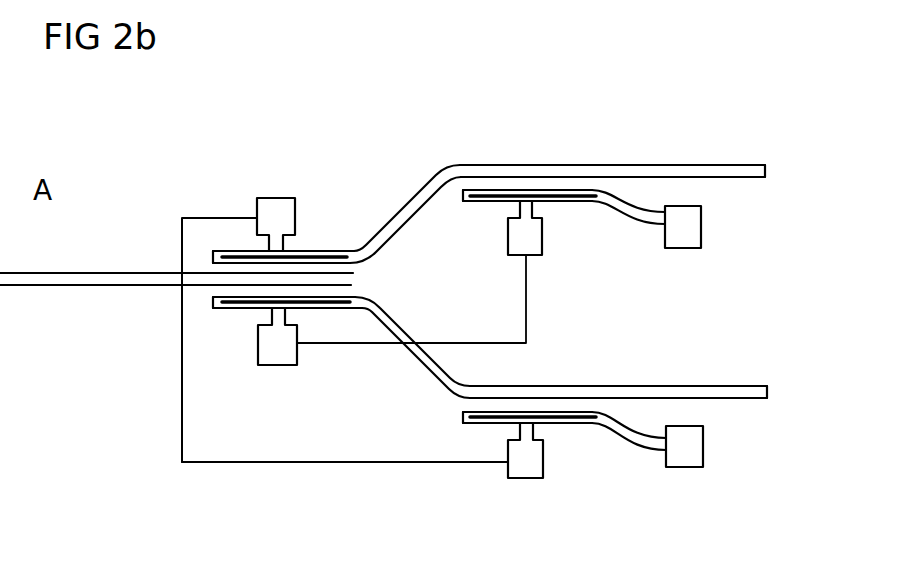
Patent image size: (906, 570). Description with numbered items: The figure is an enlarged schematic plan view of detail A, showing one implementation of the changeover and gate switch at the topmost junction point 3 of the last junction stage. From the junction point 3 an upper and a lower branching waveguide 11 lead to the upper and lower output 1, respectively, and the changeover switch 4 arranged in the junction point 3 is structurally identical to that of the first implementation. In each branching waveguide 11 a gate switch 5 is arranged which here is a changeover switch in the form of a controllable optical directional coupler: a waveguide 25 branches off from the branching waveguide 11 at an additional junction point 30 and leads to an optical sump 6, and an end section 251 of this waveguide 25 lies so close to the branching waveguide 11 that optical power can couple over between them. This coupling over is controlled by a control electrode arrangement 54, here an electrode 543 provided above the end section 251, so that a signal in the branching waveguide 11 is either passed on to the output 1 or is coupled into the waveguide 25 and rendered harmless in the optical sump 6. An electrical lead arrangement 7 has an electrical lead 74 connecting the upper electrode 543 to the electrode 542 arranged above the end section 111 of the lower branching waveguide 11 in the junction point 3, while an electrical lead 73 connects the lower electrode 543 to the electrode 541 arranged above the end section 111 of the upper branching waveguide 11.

The output 1 is at (765, 171).
The branching waveguide 11 is at (37, 286).
The end section 111 is at (336, 251).
The junction point 3 is at (222, 232).
The changeover switch 4 is at (312, 232).
The gate switch 5 is at (548, 212).
The control electrode arrangement 54 is at (215, 309).
The electrode 541 is at (246, 252).
The electrode 542 is at (244, 309).
The electrode 543 is at (586, 202).
The waveguide 25 is at (640, 226).
The end section 251 is at (480, 201).
The additional junction point 30 is at (540, 147).
The optical sump 6 is at (695, 225).
The electrical lead arrangement 7 is at (338, 470).
The electrical lead 73 is at (247, 463).
The electrical lead 74 is at (452, 343).